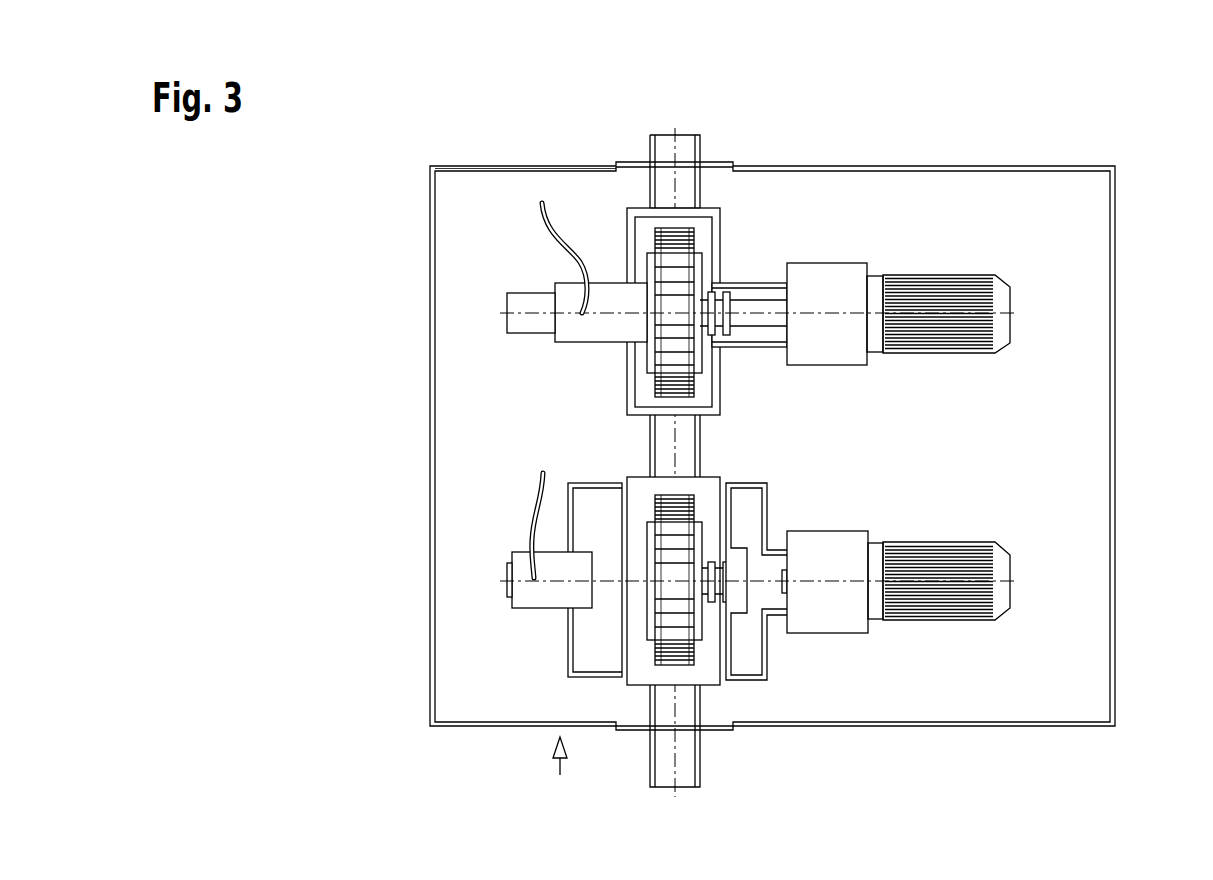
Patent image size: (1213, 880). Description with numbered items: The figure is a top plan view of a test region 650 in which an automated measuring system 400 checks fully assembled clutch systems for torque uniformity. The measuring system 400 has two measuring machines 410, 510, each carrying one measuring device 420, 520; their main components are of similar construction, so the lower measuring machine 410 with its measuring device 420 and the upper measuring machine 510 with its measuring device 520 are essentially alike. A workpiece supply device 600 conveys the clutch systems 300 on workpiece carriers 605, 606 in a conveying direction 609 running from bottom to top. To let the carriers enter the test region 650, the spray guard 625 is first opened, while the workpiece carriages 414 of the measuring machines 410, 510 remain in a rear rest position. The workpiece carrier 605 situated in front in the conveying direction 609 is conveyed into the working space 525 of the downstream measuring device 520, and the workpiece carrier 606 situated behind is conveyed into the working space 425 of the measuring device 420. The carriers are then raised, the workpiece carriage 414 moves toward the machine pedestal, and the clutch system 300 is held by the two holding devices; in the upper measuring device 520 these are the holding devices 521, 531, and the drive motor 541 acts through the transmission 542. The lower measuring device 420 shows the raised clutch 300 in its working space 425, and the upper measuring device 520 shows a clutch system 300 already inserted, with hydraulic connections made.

The measuring system 400 is at (500, 221).
The spray guard 625 is at (515, 167).
The holding device 531 is at (638, 273).
The working space 525 is at (653, 215).
The clutch system 300 is at (673, 242).
The measuring machine 510 is at (717, 200).
The measuring device 520 is at (737, 255).
The holding device 521 is at (752, 262).
The transmission 542 is at (827, 282).
The drive motor 541 is at (938, 298).
The workpiece carrier 606 is at (624, 380).
The workpiece supply device 600 is at (650, 445).
The workpiece carrier 605 is at (627, 477).
The test region 650 is at (527, 503).
The workpiece carriage 414 is at (530, 595).
The conveying direction 609 is at (560, 765).
The working space 425 is at (708, 648).
The measuring device 420 is at (757, 688).
The measuring machine 410 is at (833, 637).